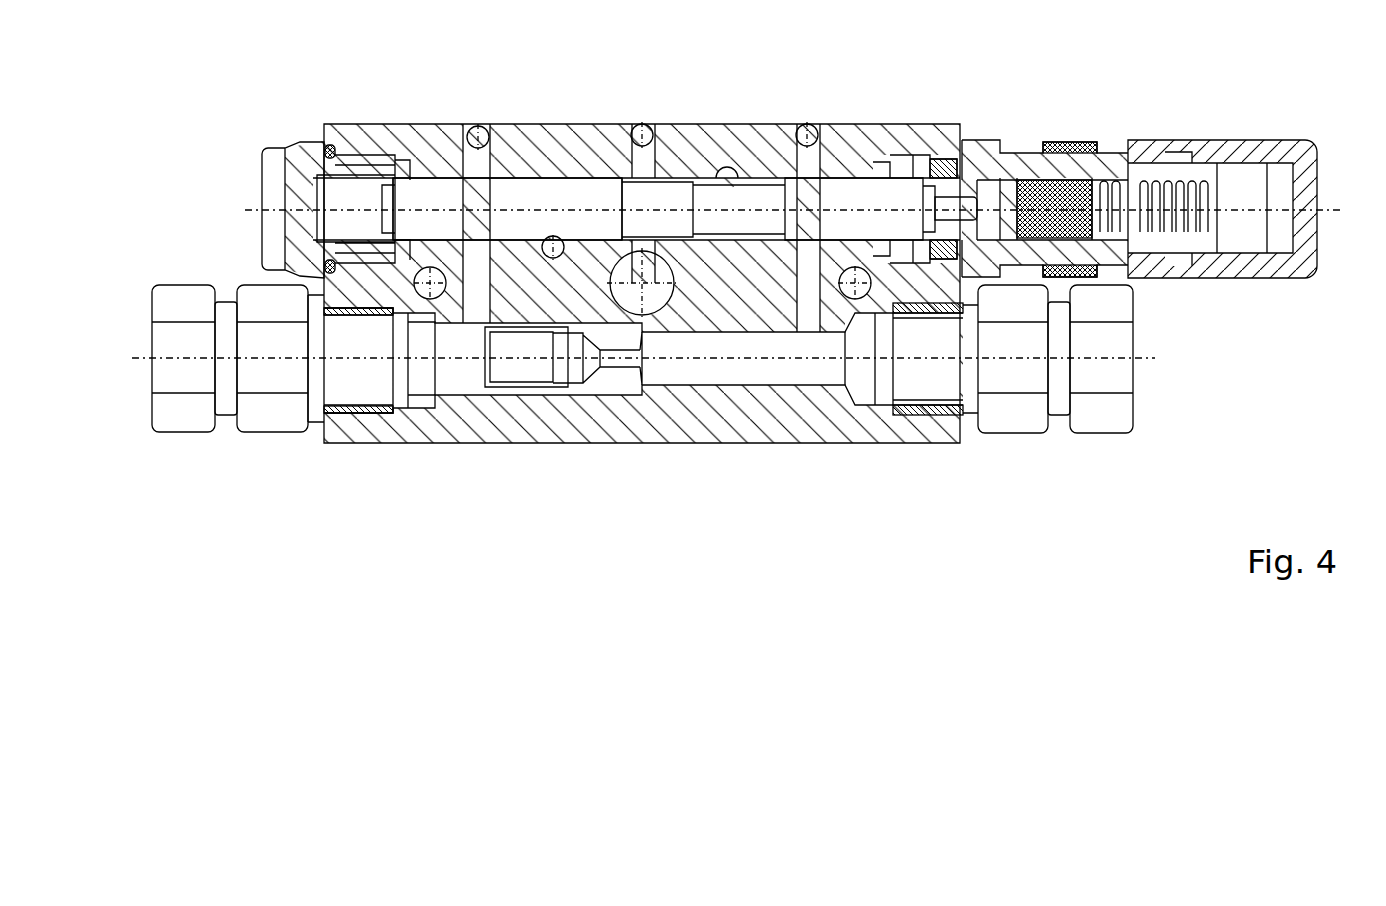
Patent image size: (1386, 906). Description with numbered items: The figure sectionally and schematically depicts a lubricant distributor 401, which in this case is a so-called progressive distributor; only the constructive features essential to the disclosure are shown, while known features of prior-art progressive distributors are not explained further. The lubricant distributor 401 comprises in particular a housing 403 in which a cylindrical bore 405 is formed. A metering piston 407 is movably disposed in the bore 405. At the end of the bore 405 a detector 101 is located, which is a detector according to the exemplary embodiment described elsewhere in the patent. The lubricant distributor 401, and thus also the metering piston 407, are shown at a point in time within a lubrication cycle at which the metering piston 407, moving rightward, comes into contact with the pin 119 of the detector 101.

The lubricant distributor 401 is at (277, 113).
The housing 403 is at (738, 152).
The cylindrical bore 405 is at (598, 183).
The metering piston 407 is at (502, 192).
The pin 119 is at (953, 207).
The detector 101 is at (1230, 124).